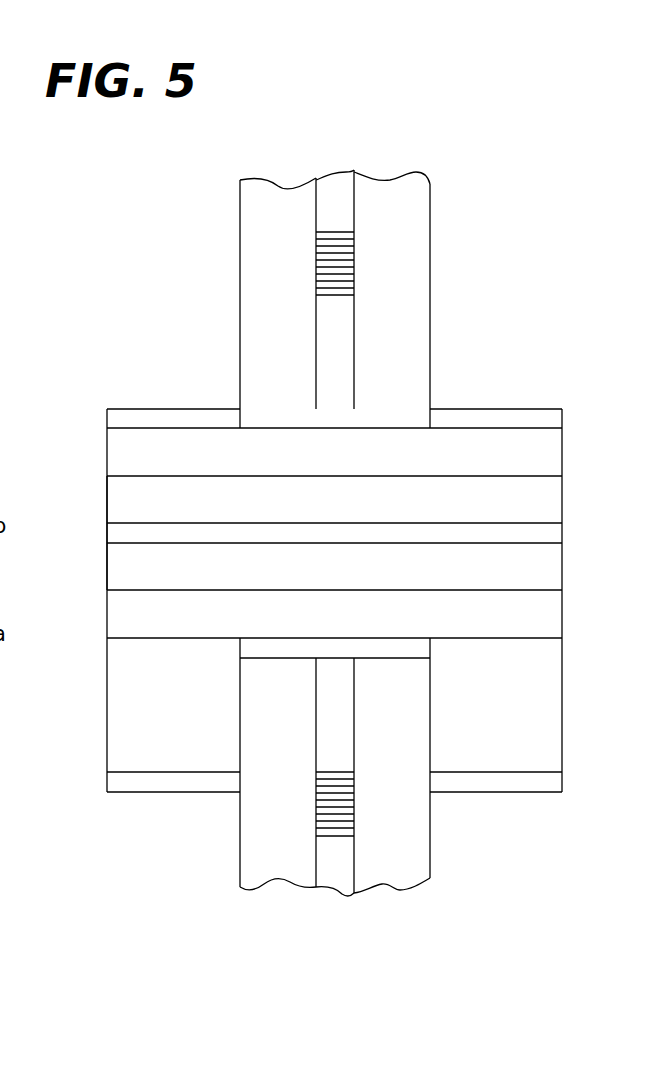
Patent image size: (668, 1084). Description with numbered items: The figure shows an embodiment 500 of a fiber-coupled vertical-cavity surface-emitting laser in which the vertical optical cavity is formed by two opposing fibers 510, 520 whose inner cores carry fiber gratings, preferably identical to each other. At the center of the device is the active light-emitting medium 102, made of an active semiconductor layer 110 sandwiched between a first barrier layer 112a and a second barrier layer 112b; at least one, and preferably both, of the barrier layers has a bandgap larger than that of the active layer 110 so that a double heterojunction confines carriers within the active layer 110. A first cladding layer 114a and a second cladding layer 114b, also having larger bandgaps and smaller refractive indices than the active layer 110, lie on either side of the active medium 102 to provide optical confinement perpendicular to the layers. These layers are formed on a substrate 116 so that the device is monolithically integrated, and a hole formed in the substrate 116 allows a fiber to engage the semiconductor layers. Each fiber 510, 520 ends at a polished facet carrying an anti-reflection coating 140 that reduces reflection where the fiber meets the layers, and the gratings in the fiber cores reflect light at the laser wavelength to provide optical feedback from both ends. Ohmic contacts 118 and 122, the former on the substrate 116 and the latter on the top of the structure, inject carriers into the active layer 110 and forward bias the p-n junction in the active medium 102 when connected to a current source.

The embodiment 500 is at (86, 203).
The fiber 510 is at (447, 250).
The fiber 520 is at (289, 891).
The anti-reflection coating 140 is at (292, 408).
The ohmic contact 122 is at (178, 408).
The active light-emitting medium 102 is at (107, 476).
The second cladding layer 114b is at (563, 458).
The second barrier layer 112b is at (563, 495).
The active semiconductor layer 110 is at (563, 533).
The first barrier layer 112a is at (563, 557).
The first cladding layer 114a is at (563, 605).
The substrate 116 is at (563, 668).
The ohmic contact 118 is at (127, 793).